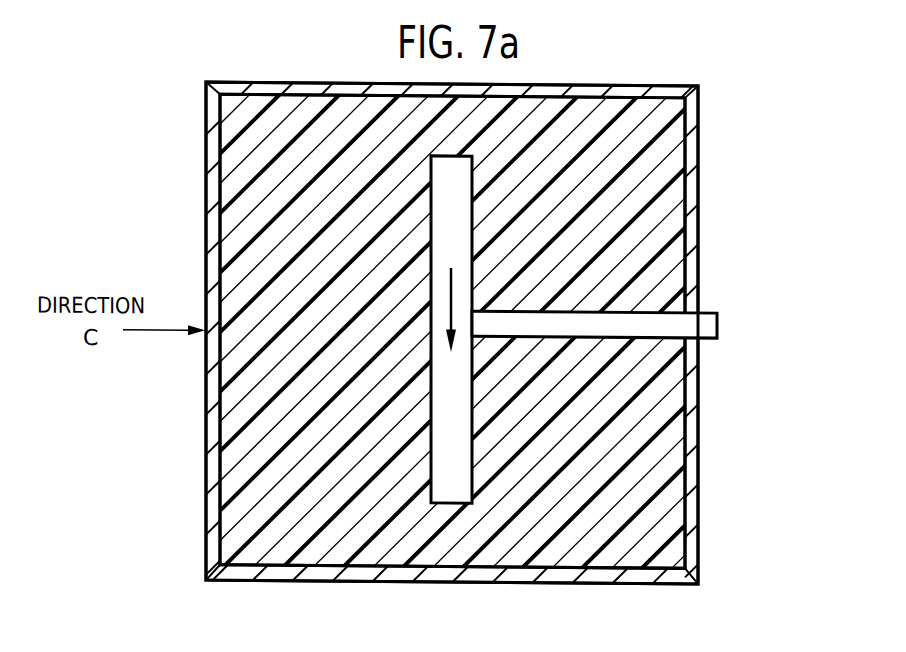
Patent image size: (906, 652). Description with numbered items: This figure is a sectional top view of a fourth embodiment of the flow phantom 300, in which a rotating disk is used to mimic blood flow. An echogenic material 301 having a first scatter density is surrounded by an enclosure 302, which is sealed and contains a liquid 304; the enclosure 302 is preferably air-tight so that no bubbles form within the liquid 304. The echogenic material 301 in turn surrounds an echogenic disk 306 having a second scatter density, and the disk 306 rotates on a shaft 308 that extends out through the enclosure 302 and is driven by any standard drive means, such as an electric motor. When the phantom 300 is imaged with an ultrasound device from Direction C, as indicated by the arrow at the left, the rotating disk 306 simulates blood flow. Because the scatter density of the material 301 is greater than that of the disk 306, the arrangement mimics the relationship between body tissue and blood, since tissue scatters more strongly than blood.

The flow phantom 300 is at (662, 42).
The echogenic material 301 is at (293, 96).
The enclosure 302 is at (677, 80).
The liquid 304 is at (667, 458).
The echogenic disk 306 is at (447, 489).
The shaft 308 is at (640, 312).